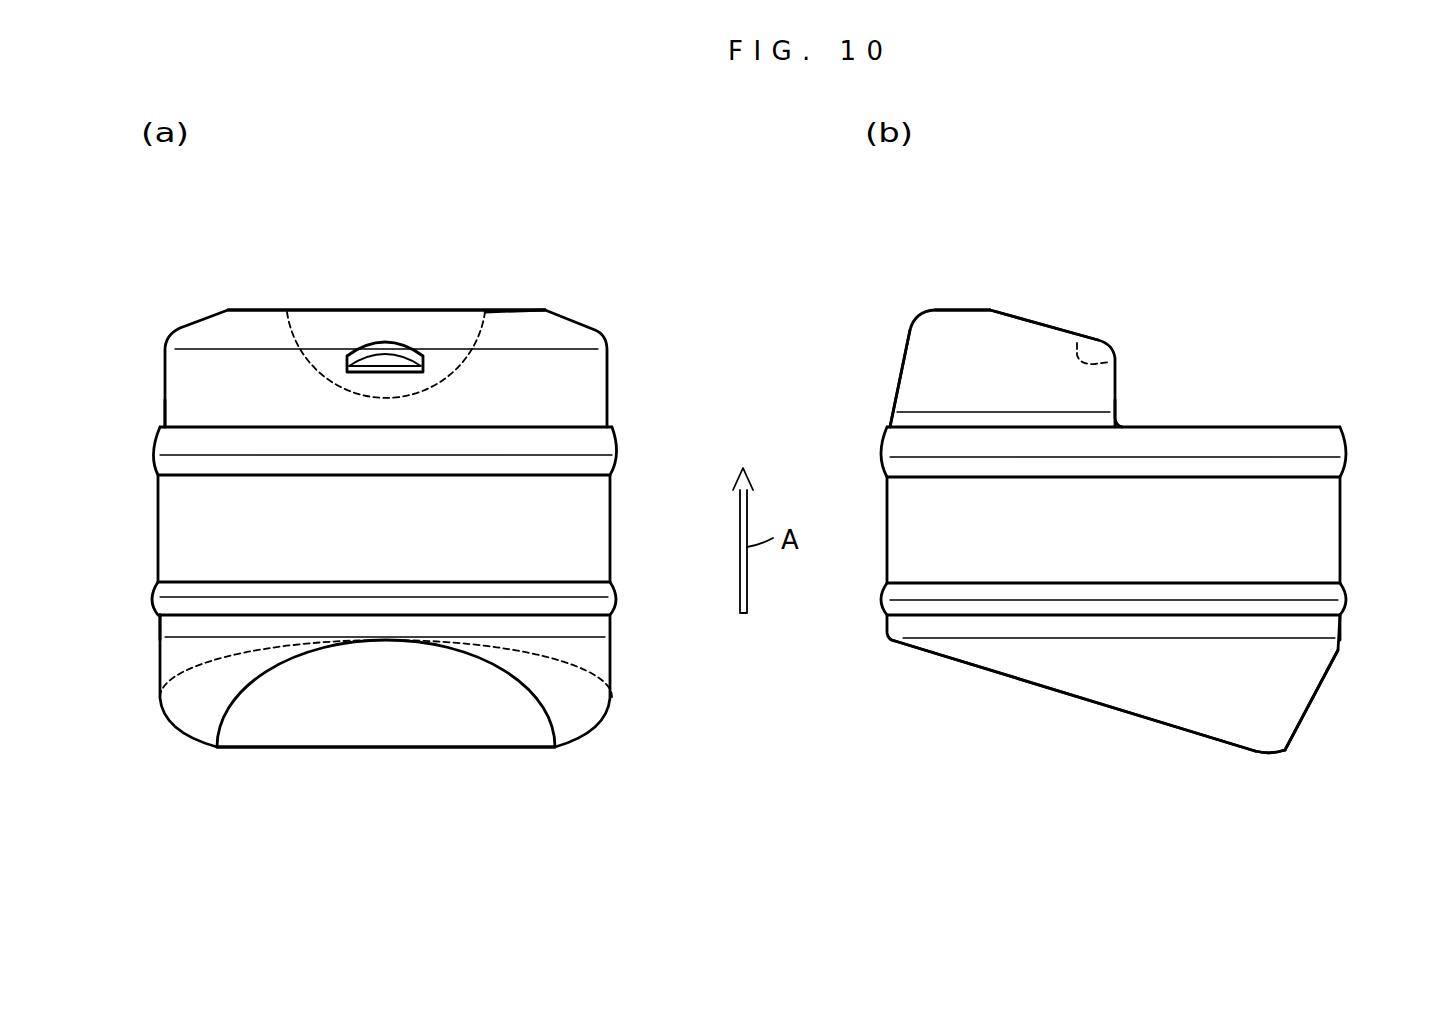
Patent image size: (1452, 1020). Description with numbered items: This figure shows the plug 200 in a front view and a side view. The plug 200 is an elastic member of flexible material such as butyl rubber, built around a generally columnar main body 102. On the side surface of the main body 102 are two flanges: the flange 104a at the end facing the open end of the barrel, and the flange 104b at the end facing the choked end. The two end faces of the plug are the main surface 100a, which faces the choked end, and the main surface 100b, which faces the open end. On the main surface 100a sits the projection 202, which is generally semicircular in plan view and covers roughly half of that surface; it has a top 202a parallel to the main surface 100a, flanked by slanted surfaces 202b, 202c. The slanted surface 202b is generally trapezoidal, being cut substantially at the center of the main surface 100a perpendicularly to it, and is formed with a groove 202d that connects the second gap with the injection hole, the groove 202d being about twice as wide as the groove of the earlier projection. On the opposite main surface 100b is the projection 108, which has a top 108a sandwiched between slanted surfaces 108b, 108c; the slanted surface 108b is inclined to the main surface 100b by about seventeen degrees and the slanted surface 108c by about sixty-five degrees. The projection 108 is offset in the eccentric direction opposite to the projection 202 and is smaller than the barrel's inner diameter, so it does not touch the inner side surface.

The plug 200 is at (170, 315).
The projection 202 is at (595, 393).
The top 202a is at (255, 310).
The slanted surface 202b is at (508, 335).
The slanted surface 202c is at (297, 350).
The groove 202d is at (400, 340).
The main surface 100a is at (208, 427).
The main surface 100b is at (213, 615).
The main body 102 is at (593, 535).
The flange 104a is at (603, 603).
The flange 104b is at (605, 443).
The projection 108 is at (573, 720).
The top 108a is at (525, 750).
The slanted surface 108b is at (212, 662).
The slanted surface 108c is at (402, 733).